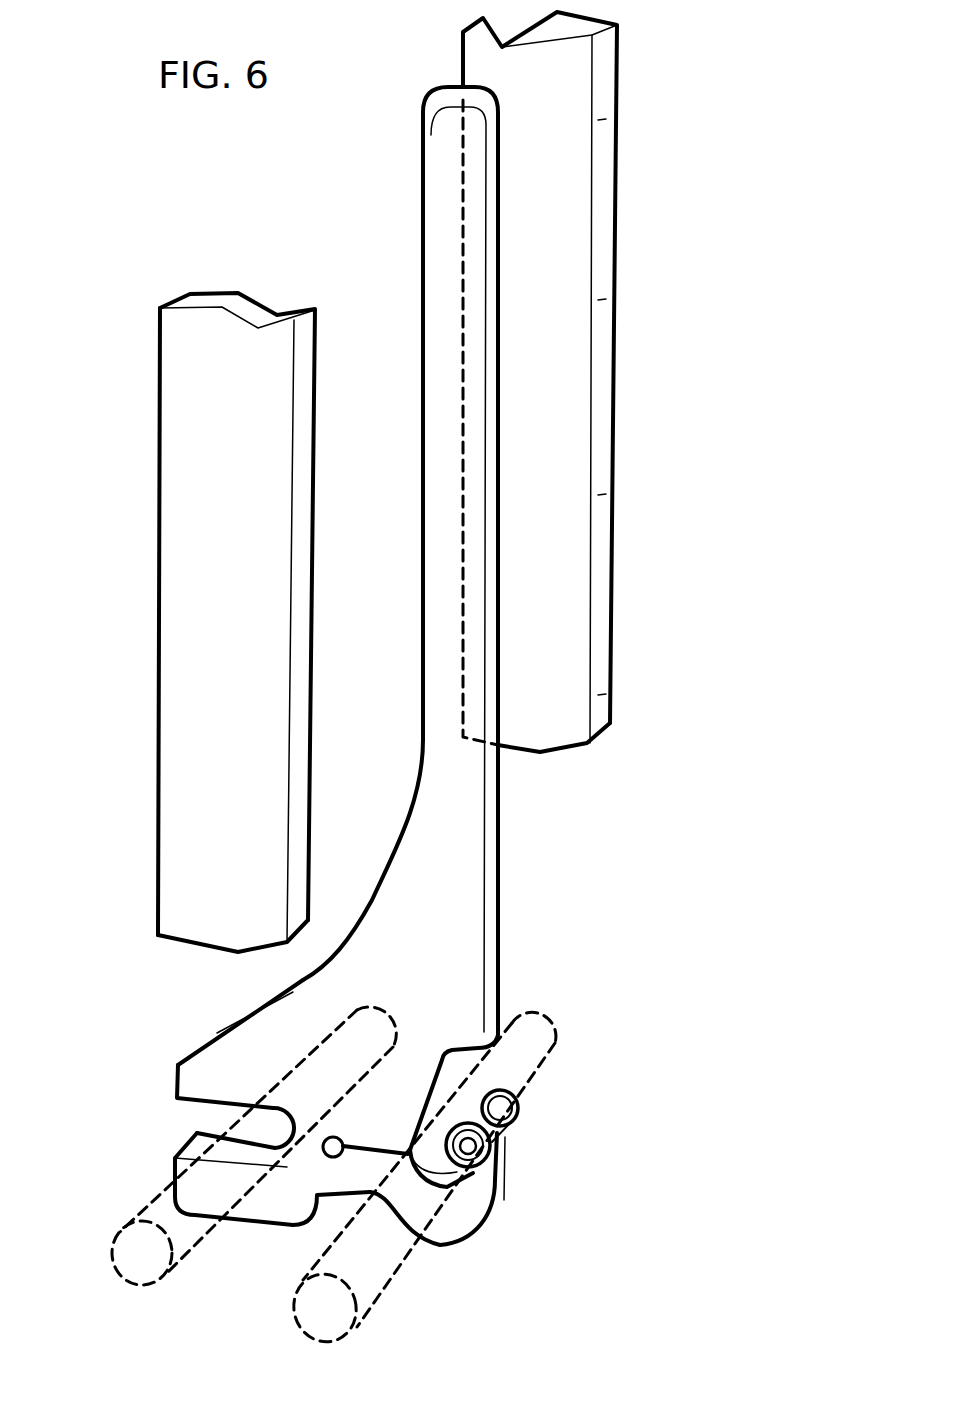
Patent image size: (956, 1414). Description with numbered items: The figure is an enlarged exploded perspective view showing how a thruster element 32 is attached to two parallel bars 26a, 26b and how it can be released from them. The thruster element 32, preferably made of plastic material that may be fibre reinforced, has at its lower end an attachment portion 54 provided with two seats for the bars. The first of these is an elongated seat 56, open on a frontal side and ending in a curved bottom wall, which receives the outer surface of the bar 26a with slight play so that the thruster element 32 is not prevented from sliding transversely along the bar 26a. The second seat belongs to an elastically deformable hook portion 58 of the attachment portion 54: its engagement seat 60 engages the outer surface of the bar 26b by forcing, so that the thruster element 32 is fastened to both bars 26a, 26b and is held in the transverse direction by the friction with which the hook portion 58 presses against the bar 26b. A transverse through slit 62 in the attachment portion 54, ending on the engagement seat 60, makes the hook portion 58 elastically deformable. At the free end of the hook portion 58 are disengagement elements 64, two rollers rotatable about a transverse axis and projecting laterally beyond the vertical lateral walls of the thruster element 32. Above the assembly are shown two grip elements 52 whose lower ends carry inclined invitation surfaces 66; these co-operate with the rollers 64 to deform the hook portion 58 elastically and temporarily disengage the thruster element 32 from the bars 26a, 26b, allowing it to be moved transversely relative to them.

The grip elements 52 is at (148, 655).
The inclined invitation surfaces 66 is at (270, 940).
The thruster element 32 is at (508, 918).
The attachment portion 54 is at (260, 1037).
The elongated seat 56 is at (203, 1108).
The transverse through slit 62 is at (375, 1147).
The disengagement elements 64 is at (503, 1137).
The engagement seat 60 is at (485, 1200).
The hook portion 58 is at (467, 1227).
The bar 26a is at (142, 1208).
The bar 26b is at (388, 1318).